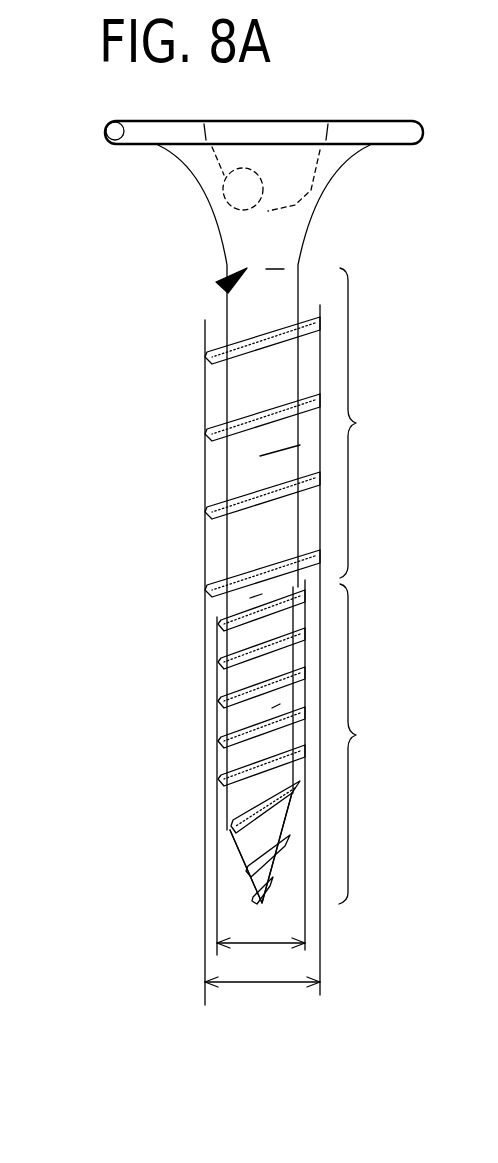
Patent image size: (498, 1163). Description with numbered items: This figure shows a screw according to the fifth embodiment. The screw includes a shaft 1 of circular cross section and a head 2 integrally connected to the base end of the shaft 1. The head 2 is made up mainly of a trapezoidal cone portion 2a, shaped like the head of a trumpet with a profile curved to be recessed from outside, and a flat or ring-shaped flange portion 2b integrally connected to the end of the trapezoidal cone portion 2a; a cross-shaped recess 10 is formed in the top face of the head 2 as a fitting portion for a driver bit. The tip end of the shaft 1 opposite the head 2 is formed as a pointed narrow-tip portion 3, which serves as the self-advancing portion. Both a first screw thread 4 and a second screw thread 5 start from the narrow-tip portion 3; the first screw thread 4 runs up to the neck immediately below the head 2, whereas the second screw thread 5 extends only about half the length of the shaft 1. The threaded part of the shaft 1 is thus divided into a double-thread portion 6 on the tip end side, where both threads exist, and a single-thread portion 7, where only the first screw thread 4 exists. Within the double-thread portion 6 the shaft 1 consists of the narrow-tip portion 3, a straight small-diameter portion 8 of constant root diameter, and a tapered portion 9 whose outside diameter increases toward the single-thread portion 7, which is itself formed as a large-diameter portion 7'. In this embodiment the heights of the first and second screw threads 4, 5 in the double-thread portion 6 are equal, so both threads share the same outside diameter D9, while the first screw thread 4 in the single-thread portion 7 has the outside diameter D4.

The shaft 1 is at (240, 472).
The head 2 is at (364, 108).
The trapezoidal cone portion 2a is at (296, 163).
The flange portion 2b is at (105, 143).
The narrow-tip portion 3 is at (223, 848).
The first screw thread 4 is at (260, 412).
The second screw thread 5 is at (224, 703).
The double-thread portion 6 is at (366, 744).
The single-thread portion 7 is at (363, 423).
The large-diameter portion 7' is at (337, 472).
The small-diameter portion 8 is at (275, 706).
The tapered portion 9 is at (250, 598).
The cross-shaped recess 10 is at (198, 188).
The outside diameter of the first screw thread in the single-thread portion D4 is at (252, 983).
The outside diameter of the screw threads in the double-thread portion D9 is at (263, 943).